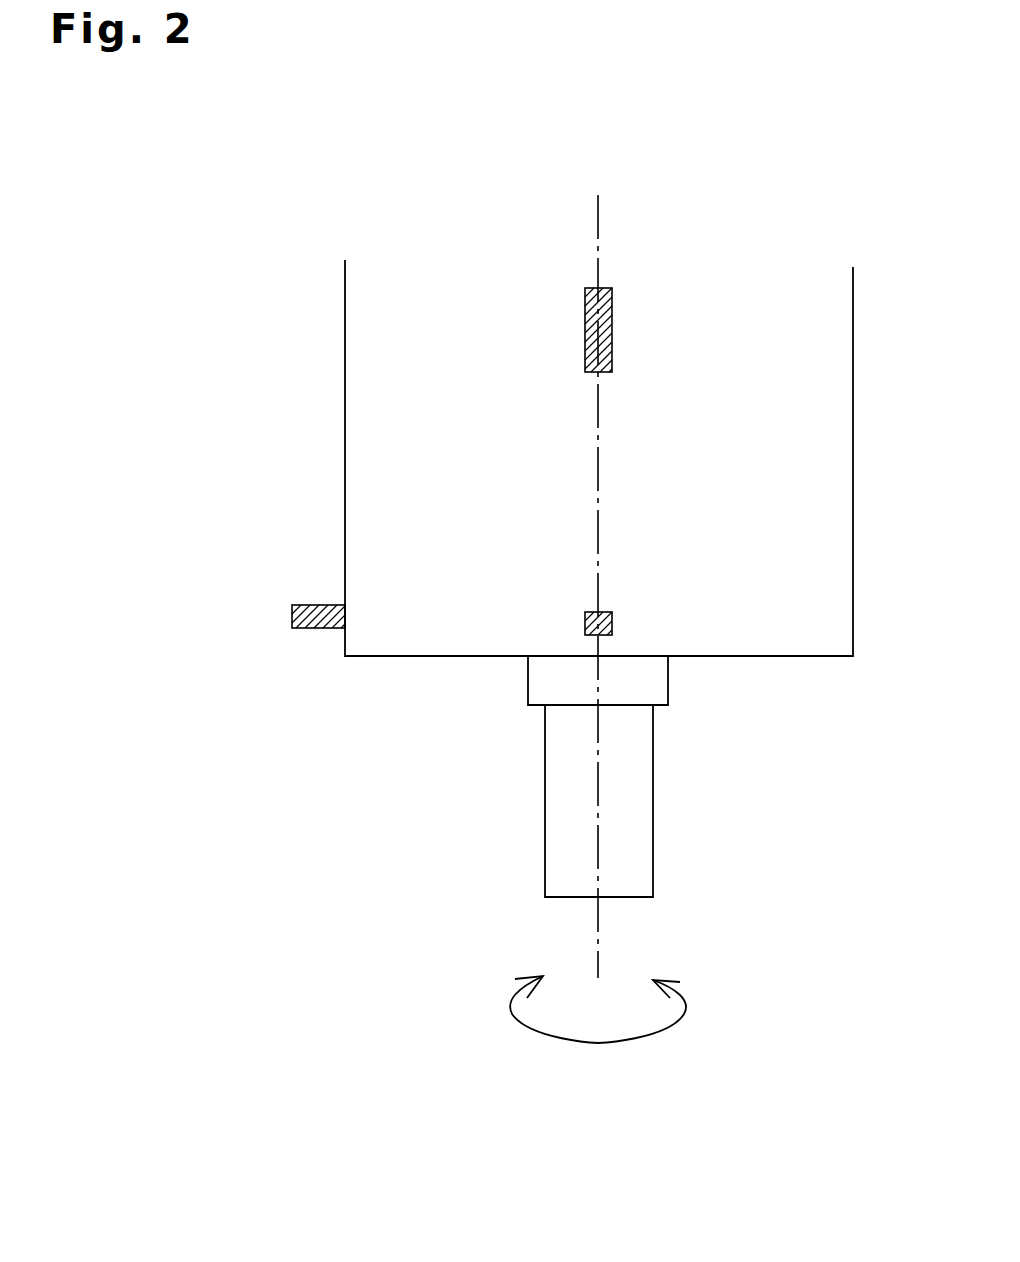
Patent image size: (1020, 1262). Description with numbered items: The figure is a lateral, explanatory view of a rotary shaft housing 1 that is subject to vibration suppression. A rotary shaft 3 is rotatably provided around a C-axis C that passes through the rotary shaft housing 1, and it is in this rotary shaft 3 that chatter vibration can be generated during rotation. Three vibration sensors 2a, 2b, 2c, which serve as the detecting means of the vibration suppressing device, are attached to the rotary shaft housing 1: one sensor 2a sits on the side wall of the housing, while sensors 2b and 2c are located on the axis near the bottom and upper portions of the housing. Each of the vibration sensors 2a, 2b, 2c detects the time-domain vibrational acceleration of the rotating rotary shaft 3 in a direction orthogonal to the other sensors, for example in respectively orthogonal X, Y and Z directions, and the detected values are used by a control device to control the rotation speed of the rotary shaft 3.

The rotary shaft housing 1 is at (360, 411).
The vibration sensor 2a is at (292, 613).
The vibration sensor 2b is at (615, 625).
The vibration sensor 2c is at (613, 328).
The rotary shaft 3 is at (560, 794).
The C-axis C is at (598, 1040).